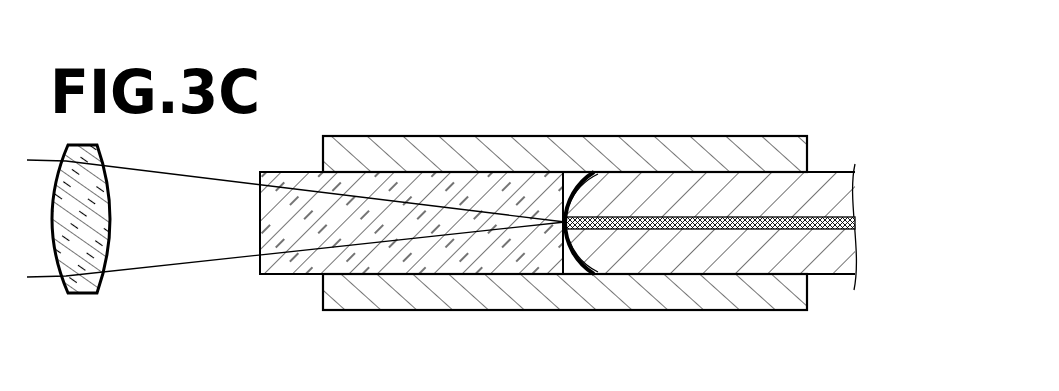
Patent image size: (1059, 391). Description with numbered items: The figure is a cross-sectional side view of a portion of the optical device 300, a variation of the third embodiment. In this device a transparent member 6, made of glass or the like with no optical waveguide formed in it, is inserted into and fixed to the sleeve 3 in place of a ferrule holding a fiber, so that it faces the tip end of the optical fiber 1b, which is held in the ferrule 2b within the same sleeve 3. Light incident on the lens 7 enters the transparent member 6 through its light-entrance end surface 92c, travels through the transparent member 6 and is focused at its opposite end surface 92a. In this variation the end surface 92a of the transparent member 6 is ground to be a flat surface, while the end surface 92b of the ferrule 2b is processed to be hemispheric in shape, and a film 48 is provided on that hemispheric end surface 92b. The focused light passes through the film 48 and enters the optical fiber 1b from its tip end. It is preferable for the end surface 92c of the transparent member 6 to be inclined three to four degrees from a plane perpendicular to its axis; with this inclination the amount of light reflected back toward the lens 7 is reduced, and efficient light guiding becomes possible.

The optical device 300 is at (546, 191).
The lens 7 is at (80, 289).
The transparent member 6 is at (303, 265).
The end surface of the transparent member 92c is at (260, 212).
The end surface of the transparent member 92a is at (560, 190).
The end surface of the ferrule 92b is at (588, 262).
The film 48 is at (598, 172).
The sleeve 3 is at (589, 150).
The optical fiber 1b is at (825, 217).
The ferrule 2b is at (828, 277).